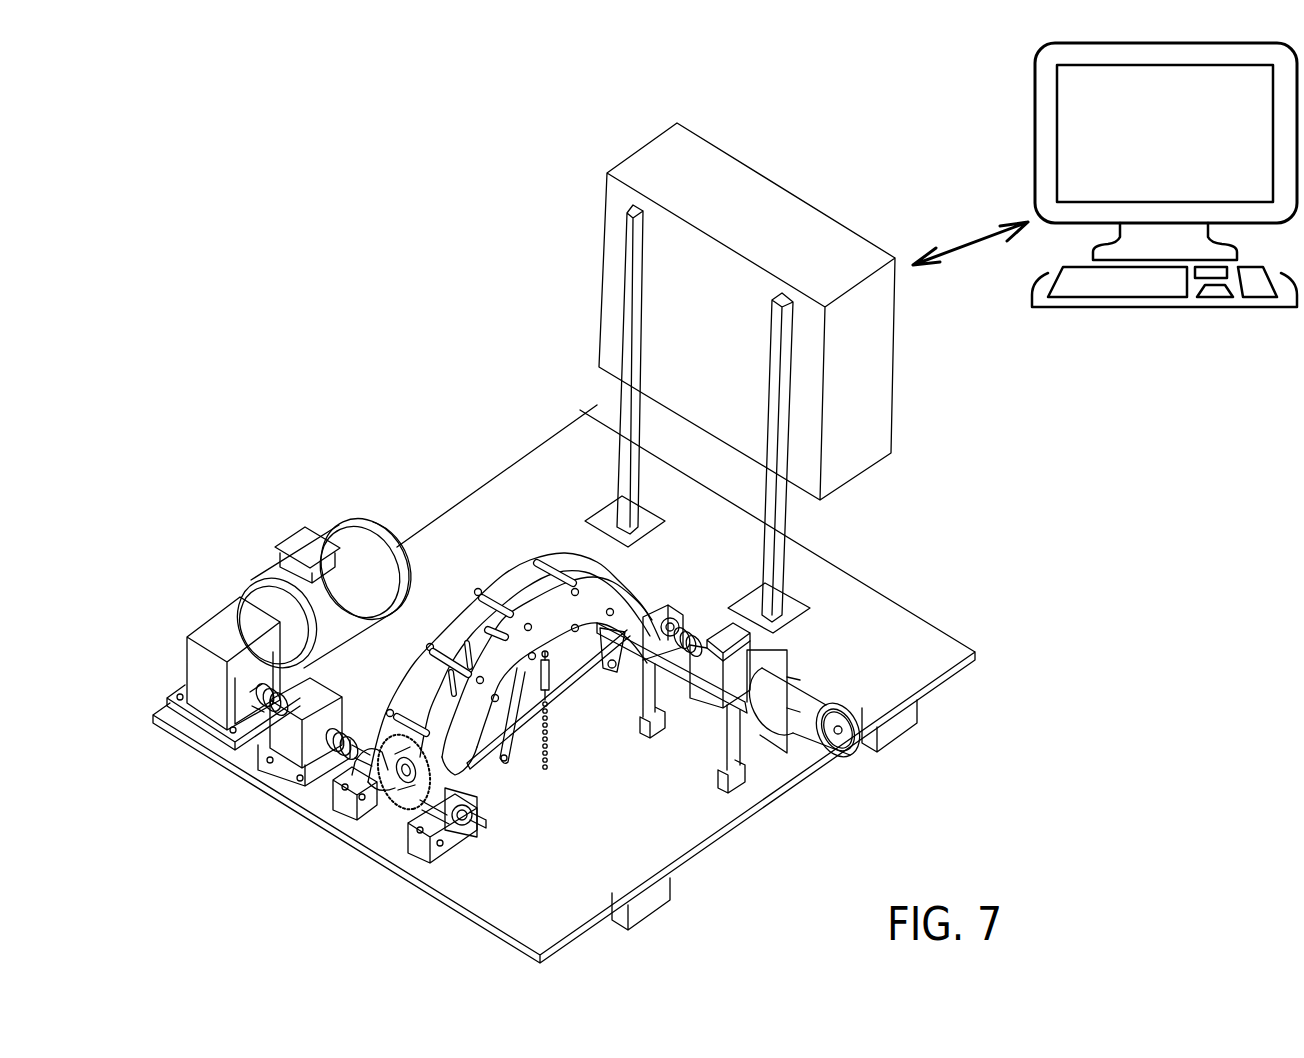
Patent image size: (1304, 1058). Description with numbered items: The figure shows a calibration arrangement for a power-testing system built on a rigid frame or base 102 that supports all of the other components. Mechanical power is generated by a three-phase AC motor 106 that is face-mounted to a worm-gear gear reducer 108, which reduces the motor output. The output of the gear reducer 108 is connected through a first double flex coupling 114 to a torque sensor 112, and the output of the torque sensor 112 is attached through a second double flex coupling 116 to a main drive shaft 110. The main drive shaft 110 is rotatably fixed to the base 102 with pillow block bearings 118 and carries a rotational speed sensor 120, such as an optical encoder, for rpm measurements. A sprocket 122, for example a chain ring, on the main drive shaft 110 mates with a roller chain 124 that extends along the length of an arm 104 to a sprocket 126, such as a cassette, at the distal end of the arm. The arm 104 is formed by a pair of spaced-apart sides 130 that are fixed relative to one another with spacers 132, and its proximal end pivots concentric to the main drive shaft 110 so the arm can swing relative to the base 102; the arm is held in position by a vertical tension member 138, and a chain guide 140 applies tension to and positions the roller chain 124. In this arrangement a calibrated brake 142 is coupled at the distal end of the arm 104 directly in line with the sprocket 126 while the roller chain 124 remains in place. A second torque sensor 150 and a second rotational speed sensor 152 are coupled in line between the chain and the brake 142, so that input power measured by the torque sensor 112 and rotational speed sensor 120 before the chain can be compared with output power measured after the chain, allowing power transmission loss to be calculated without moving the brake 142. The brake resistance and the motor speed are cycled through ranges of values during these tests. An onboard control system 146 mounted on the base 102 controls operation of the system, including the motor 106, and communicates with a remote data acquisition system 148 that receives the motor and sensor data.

The base 102 is at (677, 832).
The arm 104 is at (507, 609).
The AC motor 106 is at (340, 530).
The gear reducer 108 is at (206, 633).
The main drive shaft 110 is at (473, 827).
The torque sensor 112 is at (295, 733).
The first double flex coupling 114 is at (277, 712).
The second double flex coupling 116 is at (330, 750).
The pillow block bearings 118 is at (362, 768).
The rotational speed sensor 120 is at (393, 820).
The sprocket 122 is at (393, 813).
The roller chain 124 is at (572, 700).
The sprocket 126 is at (627, 575).
The sides 130 is at (467, 610).
The spacers 132 is at (520, 555).
The vertical tension member 138 is at (550, 752).
The chain guide 140 is at (503, 770).
The calibrated brake 142 is at (832, 742).
The onboard control system 146 is at (913, 433).
The remote data acquisition system 148 is at (1197, 316).
The second torque sensor 150 is at (745, 640).
The second rotational speed sensor 152 is at (677, 610).